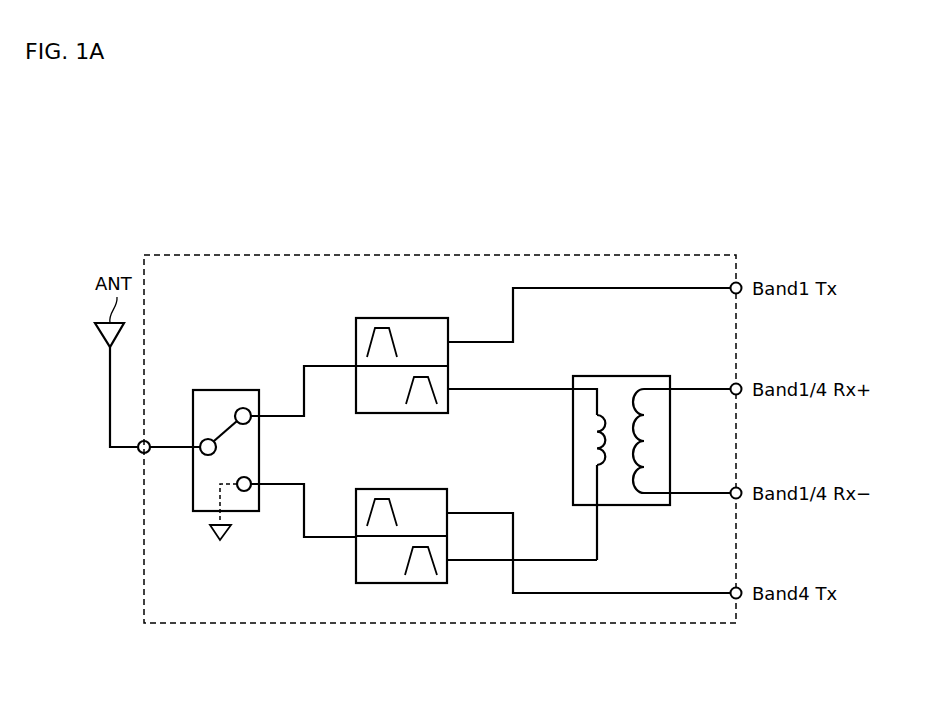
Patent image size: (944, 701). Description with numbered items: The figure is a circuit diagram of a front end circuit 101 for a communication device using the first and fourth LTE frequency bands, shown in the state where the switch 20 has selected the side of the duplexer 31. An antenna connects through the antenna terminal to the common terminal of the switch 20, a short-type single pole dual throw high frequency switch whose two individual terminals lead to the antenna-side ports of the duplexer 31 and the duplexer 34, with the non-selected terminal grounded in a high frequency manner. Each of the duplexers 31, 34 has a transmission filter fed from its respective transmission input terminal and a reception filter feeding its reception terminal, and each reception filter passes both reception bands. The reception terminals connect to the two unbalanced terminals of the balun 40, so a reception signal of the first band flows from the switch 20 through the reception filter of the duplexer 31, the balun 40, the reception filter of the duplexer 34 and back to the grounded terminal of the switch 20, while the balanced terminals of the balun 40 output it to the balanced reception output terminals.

The front end circuit 101 is at (509, 255).
The switch 20 is at (228, 390).
The duplexer 31 is at (447, 318).
The duplexer 34 is at (447, 489).
The balun 40 is at (622, 376).